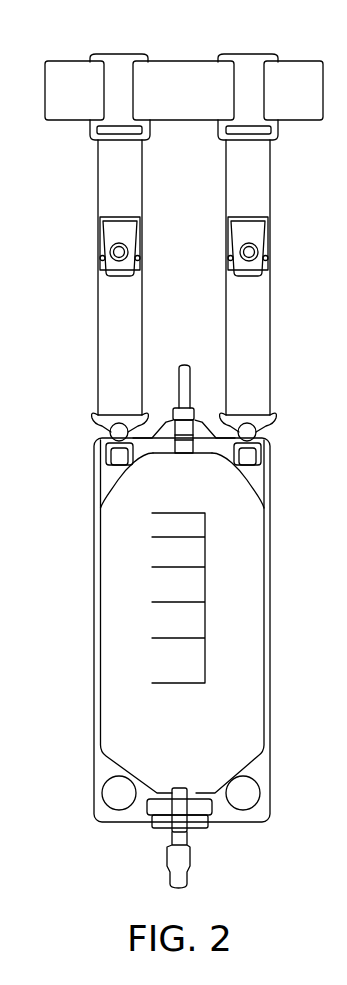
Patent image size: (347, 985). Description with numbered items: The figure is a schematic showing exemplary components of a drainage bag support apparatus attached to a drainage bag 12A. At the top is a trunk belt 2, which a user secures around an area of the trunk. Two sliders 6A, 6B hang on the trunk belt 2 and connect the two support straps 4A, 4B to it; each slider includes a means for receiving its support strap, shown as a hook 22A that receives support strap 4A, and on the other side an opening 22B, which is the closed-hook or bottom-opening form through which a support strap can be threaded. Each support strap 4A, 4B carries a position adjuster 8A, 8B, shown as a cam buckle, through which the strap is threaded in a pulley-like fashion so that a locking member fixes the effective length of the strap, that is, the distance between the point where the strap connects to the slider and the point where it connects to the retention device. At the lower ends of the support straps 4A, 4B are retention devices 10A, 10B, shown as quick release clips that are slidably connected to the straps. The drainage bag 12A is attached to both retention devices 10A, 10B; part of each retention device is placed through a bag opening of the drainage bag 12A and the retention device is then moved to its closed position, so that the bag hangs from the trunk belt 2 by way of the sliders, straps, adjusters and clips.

The trunk belt 2 is at (181, 80).
The slider 6A is at (118, 58).
The slider 6B is at (245, 58).
The hook 22A is at (90, 130).
The opening 22B is at (278, 130).
The support strap 4A is at (120, 331).
The support strap 4B is at (250, 323).
The position adjuster 8A is at (118, 236).
The position adjuster 8B is at (250, 237).
The retention device 10A is at (93, 418).
The retention device 10B is at (255, 432).
The drainage bag 12A is at (230, 694).